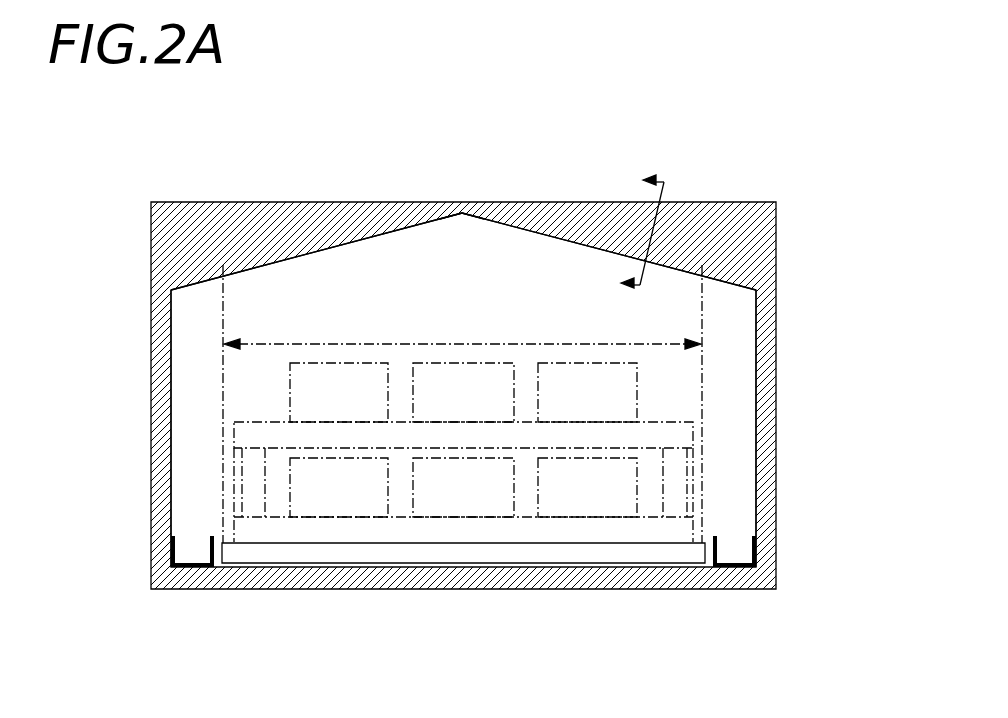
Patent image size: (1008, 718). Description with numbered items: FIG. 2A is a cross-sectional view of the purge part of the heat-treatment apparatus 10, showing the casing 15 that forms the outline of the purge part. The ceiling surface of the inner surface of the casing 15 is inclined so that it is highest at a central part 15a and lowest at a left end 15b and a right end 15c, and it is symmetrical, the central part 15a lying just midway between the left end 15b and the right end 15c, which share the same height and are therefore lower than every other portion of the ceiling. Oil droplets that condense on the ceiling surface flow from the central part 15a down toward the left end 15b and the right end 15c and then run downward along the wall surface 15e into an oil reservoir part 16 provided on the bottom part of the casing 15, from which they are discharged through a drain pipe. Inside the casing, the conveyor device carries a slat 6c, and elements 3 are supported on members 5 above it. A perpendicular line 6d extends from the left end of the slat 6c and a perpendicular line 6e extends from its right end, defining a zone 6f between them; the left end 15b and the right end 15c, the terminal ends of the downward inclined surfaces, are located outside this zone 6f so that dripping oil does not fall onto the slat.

The light emitting device 10 is at (200, 177).
The casing 15 is at (162, 273).
The central part 15a is at (462, 218).
The left end 15b is at (170, 292).
The right end 15c is at (770, 290).
The wall surface 15e is at (172, 450).
The oil reservoir part 16 is at (182, 560).
The slat 6c is at (643, 564).
The perpendicular line 6d is at (223, 401).
The perpendicular line 6e is at (704, 386).
The zone 6f is at (462, 324).
The support member 5 is at (387, 438).
The light emitting element 3 is at (322, 398).